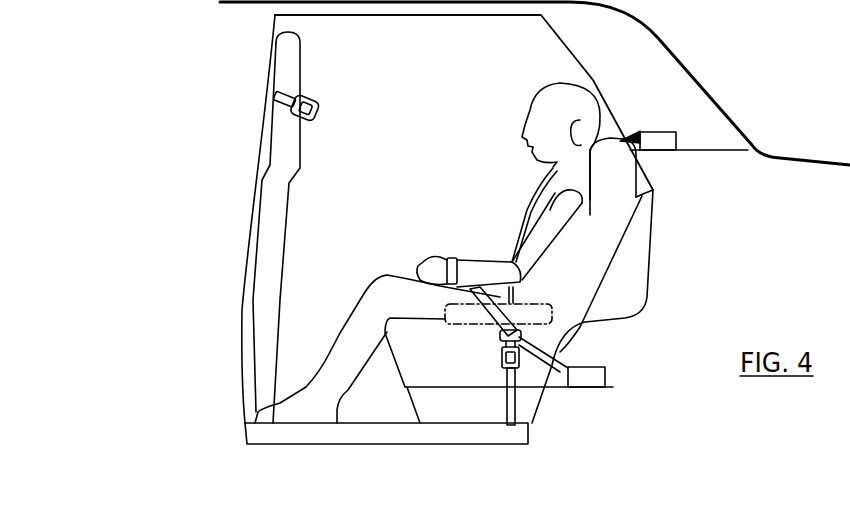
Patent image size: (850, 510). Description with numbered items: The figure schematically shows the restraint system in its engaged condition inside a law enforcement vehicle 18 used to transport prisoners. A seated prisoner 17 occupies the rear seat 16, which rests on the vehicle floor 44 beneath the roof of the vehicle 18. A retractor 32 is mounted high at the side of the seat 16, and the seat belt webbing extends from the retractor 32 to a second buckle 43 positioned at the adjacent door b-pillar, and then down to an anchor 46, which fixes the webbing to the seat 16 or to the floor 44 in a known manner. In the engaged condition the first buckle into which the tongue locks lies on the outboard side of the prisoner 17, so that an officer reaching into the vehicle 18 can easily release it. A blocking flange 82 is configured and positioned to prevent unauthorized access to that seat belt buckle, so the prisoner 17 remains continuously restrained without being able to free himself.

The vehicle 18 is at (637, 50).
The retractor 32 is at (663, 137).
The second buckle 43 is at (288, 97).
The rear seat 16 is at (603, 237).
The seated prisoner 17 is at (312, 407).
The blocking flange 82 is at (490, 330).
The vehicle floor 44 is at (398, 432).
The anchor 46 is at (583, 378).